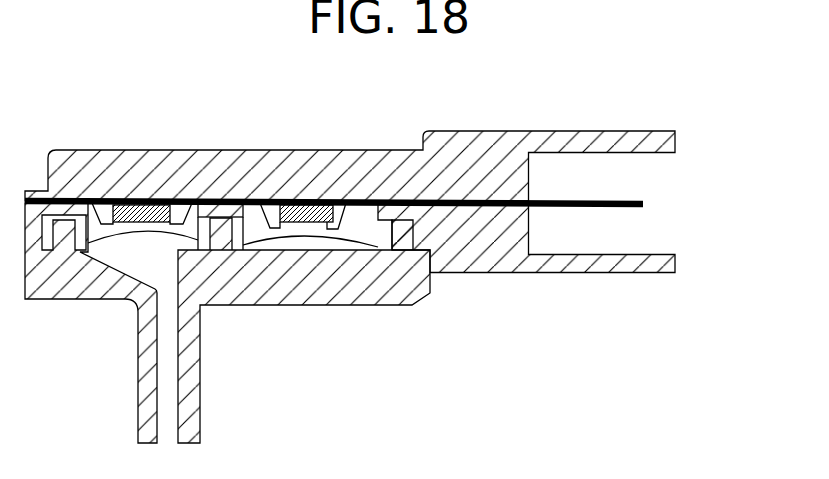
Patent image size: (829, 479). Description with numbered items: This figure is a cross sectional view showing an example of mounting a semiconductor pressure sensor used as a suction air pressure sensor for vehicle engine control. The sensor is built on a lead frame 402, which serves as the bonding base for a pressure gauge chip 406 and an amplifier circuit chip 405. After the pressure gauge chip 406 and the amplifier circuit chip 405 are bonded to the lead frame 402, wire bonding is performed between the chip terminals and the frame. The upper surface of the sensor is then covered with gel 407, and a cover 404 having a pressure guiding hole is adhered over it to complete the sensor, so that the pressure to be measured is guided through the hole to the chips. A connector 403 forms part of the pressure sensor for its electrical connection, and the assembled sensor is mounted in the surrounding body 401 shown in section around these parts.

The connector housing 401 is at (497, 250).
The lead frame 402 is at (255, 200).
The connector 403 is at (600, 188).
The cover 404 is at (190, 392).
The amplifier circuit chip 405 is at (303, 222).
The pressure gauge chip 406 is at (143, 220).
The gel 407 is at (367, 238).